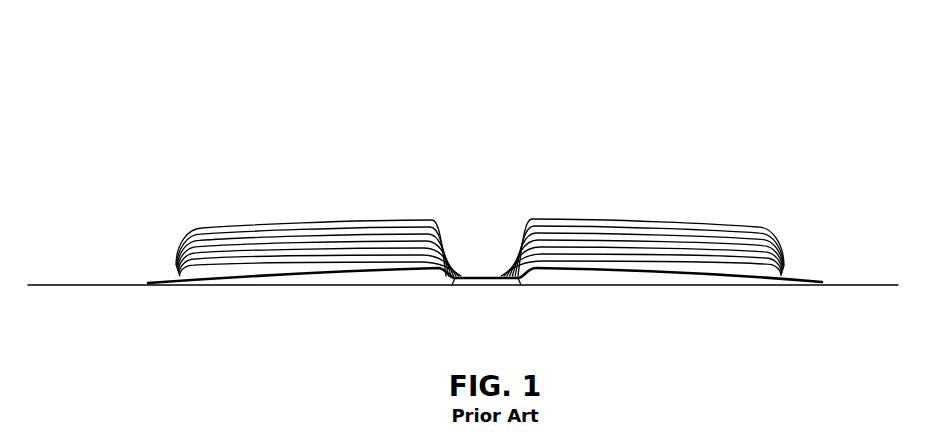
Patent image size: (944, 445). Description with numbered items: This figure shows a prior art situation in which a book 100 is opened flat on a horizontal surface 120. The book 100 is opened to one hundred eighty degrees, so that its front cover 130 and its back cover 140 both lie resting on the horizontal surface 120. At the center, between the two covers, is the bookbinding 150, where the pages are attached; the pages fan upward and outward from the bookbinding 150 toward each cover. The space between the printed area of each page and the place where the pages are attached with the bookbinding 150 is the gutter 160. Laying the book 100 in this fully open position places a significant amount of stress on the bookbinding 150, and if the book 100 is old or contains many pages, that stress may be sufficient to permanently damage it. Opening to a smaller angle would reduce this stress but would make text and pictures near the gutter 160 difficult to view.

The book 100 is at (736, 63).
The horizontal surface 120 is at (77, 285).
The front cover 130 is at (220, 284).
The back cover 140 is at (723, 284).
The bookbinding 150 is at (508, 286).
The gutter 160 is at (488, 209).